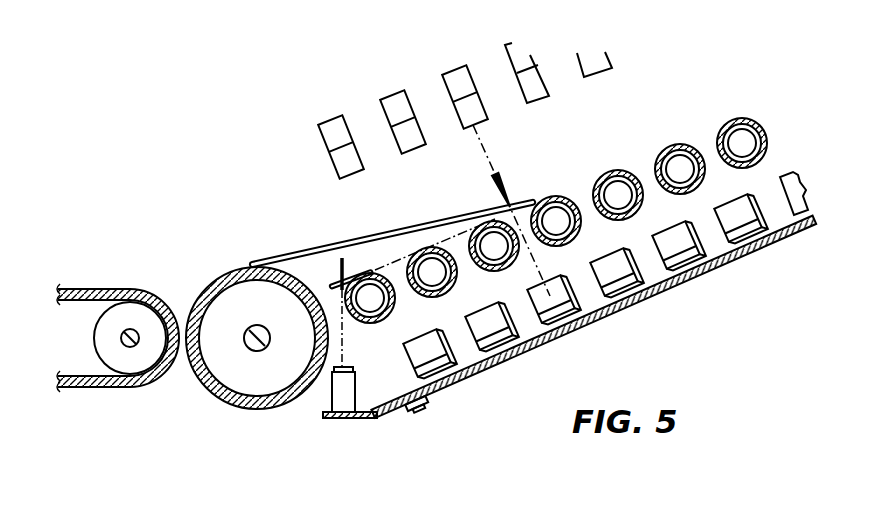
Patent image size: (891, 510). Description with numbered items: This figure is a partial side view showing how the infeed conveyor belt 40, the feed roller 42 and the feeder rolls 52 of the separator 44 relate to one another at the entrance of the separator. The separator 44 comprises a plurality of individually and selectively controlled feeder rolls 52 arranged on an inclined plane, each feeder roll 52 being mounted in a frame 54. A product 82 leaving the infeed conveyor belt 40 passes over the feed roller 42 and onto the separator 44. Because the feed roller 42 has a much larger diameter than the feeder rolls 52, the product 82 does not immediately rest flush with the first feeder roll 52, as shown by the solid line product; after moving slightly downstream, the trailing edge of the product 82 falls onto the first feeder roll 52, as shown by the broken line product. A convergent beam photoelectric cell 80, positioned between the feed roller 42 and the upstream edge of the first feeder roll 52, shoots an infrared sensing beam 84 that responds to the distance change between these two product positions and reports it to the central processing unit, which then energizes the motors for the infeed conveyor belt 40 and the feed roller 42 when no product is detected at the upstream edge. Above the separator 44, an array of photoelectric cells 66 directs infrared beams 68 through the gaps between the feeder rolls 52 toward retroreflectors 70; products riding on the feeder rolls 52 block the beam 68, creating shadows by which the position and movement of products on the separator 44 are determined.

The infeed conveyor belt 40 is at (90, 386).
The feed roller 42 is at (248, 388).
The separator 44 is at (786, 281).
The feeder roll 52 is at (752, 137).
The frame 54 is at (655, 294).
The photoelectric cell 66 is at (452, 83).
The infrared beam 68 is at (482, 143).
The retroreflector 70 is at (428, 356).
The convergent beam photoelectric cell 80 is at (342, 408).
The product 82 is at (338, 253).
The infrared sensing beam 84 is at (342, 345).